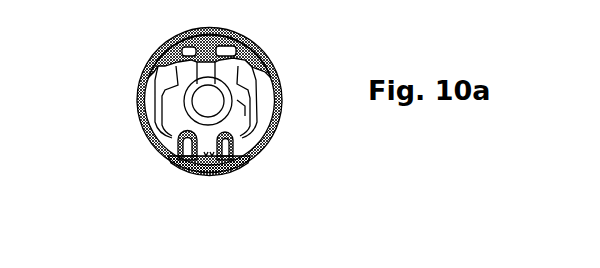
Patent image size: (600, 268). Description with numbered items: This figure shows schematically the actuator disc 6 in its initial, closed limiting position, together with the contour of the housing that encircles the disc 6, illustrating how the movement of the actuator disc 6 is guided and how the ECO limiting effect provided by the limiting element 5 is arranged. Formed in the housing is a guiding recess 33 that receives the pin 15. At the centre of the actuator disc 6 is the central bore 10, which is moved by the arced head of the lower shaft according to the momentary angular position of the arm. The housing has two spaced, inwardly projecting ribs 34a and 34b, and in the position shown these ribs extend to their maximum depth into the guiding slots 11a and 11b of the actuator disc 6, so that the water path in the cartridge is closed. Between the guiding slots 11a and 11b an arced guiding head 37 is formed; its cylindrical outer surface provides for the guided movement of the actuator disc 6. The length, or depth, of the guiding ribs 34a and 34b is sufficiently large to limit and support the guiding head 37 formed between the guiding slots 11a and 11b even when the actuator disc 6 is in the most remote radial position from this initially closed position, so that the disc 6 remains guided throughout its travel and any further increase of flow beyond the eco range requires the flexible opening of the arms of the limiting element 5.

The limiting element 5 is at (245, 85).
The actuator disc 6 is at (243, 135).
The central bore 10 is at (203, 103).
The guiding slot 11a is at (182, 142).
The guiding slot 11b is at (238, 147).
The pin 15 is at (210, 46).
The guiding recess 33 is at (193, 53).
The guiding rib 34a is at (190, 157).
The guiding rib 34b is at (226, 156).
The guiding head 37 is at (213, 166).